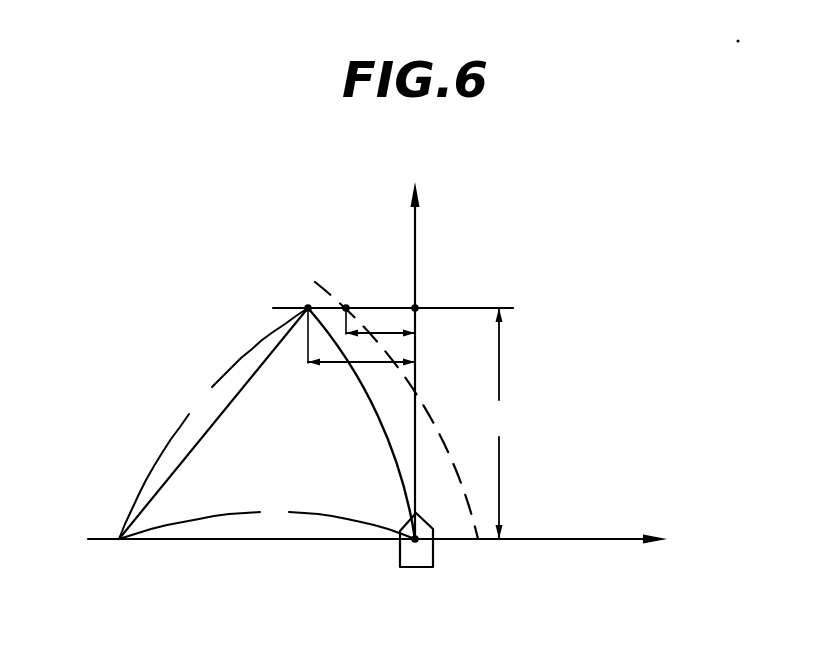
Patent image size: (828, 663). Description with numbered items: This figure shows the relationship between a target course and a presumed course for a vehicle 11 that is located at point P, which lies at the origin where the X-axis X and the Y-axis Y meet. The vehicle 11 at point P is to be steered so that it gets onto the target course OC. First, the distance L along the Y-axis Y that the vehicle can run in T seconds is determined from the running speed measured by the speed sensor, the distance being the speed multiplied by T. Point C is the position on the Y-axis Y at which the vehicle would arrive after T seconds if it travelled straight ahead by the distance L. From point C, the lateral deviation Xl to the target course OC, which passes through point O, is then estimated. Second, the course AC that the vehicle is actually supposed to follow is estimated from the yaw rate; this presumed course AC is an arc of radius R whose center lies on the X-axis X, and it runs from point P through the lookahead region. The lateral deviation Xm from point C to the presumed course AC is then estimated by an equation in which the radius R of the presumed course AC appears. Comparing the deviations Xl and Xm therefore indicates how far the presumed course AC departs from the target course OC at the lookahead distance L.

The vehicle 11 is at (400, 559).
The point P is at (416, 547).
The point C is at (417, 307).
The point O is at (346, 305).
The radius of the presumed course R is at (267, 423).
The presumed course AC is at (392, 448).
The target course OC is at (459, 477).
The lateral deviation xl Xl is at (377, 333).
The lateral deviation xm Xm is at (367, 363).
The distance L is at (498, 423).
The X-axis X is at (390, 543).
The Y-axis Y is at (413, 342).